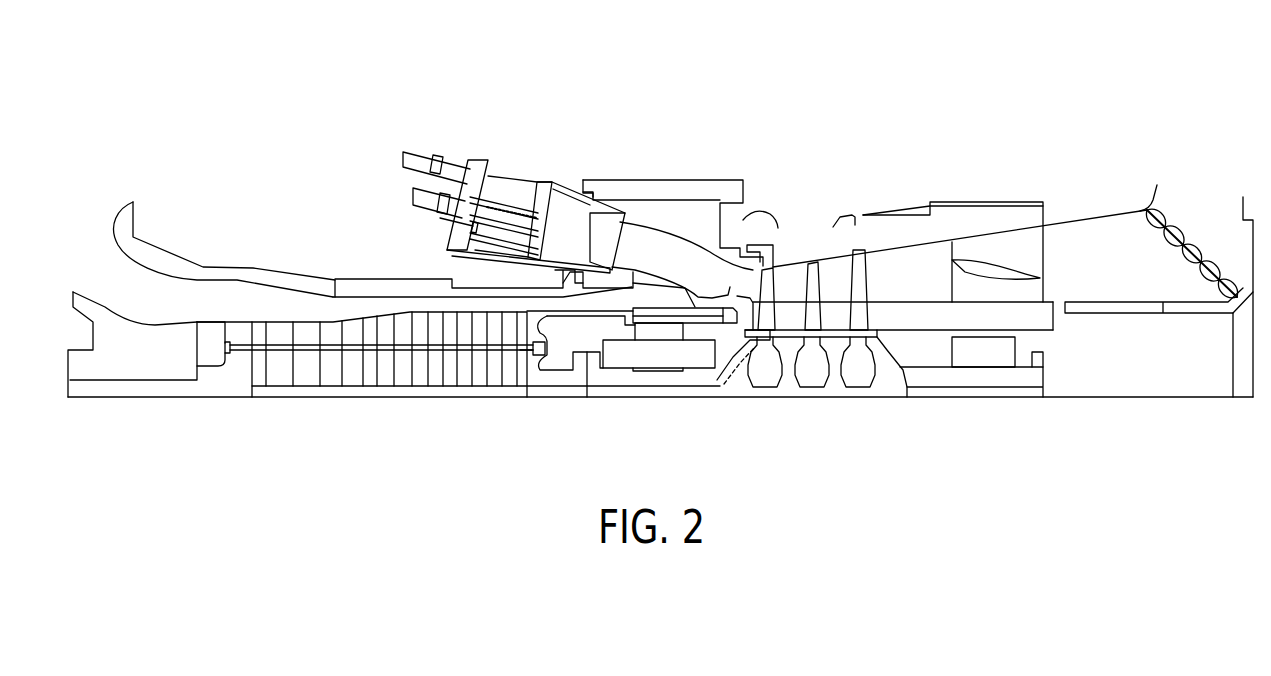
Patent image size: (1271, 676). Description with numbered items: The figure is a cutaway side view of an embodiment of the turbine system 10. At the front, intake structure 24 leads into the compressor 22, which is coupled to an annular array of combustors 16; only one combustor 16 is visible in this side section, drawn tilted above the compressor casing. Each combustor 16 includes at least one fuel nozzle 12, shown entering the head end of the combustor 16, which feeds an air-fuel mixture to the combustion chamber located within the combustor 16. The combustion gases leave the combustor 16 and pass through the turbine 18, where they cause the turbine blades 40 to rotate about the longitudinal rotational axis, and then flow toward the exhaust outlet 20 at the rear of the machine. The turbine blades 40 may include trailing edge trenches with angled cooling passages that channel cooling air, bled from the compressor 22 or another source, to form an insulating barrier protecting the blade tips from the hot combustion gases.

The turbine system 10 is at (634, 88).
The fuel nozzle 12 is at (508, 205).
The combustor 16 is at (541, 171).
The turbine 18 is at (842, 170).
The exhaust outlet 20 is at (1247, 170).
The compressor 22 is at (487, 273).
The air intake 24 is at (128, 298).
The turbine blades 40 is at (815, 267).